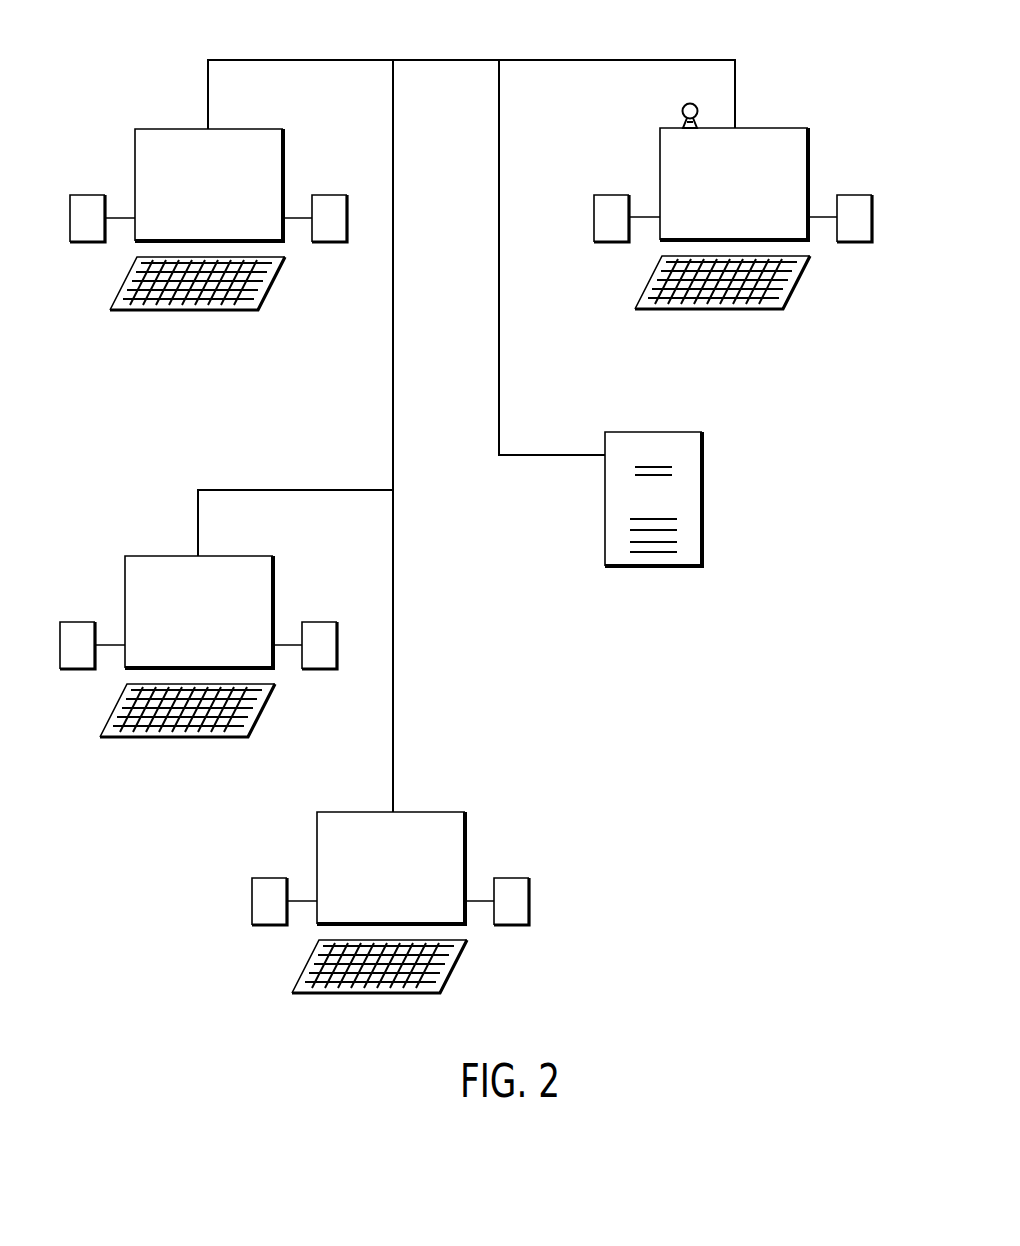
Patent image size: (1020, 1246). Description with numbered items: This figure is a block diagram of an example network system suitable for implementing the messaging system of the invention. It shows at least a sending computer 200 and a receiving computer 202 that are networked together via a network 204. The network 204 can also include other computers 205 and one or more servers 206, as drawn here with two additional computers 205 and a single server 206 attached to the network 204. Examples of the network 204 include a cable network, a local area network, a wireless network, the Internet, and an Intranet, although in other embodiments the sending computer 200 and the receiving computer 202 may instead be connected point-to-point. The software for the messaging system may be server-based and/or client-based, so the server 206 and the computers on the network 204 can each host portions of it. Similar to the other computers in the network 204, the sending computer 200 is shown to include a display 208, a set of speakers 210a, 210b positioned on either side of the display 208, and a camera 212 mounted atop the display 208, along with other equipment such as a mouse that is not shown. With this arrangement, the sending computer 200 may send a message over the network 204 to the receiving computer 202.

The sending computer 200 is at (734, 198).
The receiving computer 202 is at (250, 128).
The network 204 is at (440, 58).
The other computers 205 is at (237, 556).
The server 206 is at (702, 450).
The display 208 is at (780, 173).
The speaker 210a is at (607, 218).
The speaker 210b is at (857, 218).
The camera 212 is at (681, 107).